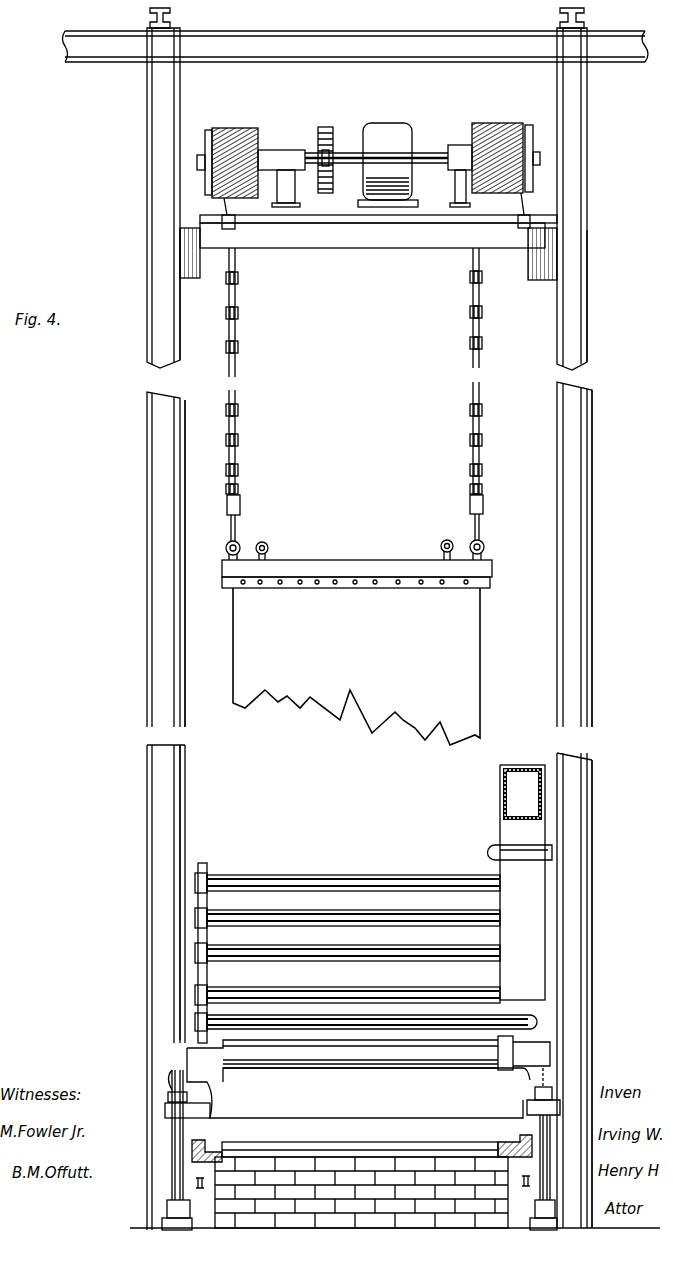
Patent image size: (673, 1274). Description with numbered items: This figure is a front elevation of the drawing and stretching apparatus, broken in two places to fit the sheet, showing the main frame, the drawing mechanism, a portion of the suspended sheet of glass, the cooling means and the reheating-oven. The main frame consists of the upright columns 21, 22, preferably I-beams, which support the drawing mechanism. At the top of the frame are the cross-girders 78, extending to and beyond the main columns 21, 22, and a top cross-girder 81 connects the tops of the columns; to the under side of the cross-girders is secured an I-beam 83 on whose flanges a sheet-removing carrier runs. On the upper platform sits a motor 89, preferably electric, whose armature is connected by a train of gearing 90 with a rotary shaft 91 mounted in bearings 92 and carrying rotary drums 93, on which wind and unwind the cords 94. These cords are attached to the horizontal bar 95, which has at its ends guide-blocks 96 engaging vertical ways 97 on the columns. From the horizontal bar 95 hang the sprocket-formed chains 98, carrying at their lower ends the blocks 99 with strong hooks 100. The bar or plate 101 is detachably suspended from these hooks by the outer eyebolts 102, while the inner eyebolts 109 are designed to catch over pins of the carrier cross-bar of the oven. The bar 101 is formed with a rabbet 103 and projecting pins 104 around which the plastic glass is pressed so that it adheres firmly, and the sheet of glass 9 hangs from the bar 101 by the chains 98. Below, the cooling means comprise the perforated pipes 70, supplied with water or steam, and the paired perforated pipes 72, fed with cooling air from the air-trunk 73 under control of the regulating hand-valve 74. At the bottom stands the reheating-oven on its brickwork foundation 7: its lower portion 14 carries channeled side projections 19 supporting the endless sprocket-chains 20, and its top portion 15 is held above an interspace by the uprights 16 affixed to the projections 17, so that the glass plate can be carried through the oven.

The brick foundation 7 is at (395, 1194).
The sheet of glass 9 is at (356, 666).
The lower portion of the oven 14 is at (360, 1151).
The top portion of the oven 15 is at (368, 1077).
The uprights 16 is at (567, 1127).
The projections 17 is at (168, 1088).
The channeled side projections 19 is at (362, 1140).
The endless sprocket-chains 20 is at (363, 1191).
The upright column 21 is at (153, 629).
The upright column 22 is at (586, 628).
The perforated pipes 70 is at (497, 1015).
The perforated pipes 72 is at (490, 891).
The air-trunk 73 is at (522, 882).
The regulating hand-valve 74 is at (490, 852).
The cross-girders 78 is at (585, 20).
The top cross-girder 81 is at (355, 24).
The I-beam 83 is at (356, 46).
The motor 89 is at (388, 165).
The train of gearing 90 is at (331, 134).
The rotary shaft 91 is at (446, 166).
The bearings 92 is at (365, 176).
The rotary drums 93 is at (368, 150).
The cords 94 is at (222, 210).
The horizontal bar 95 is at (378, 232).
The guide-blocks 96 is at (368, 254).
The vertical ways 97 is at (181, 306).
The chains 98 is at (238, 317).
The blocks 99 is at (355, 506).
The hooks 100 is at (237, 532).
The bar or plate 101 is at (222, 568).
The eyebolts 102 is at (354, 549).
The rabbet 103 is at (222, 585).
The pins 104 is at (430, 584).
The inner eyebolts 109 is at (354, 545).